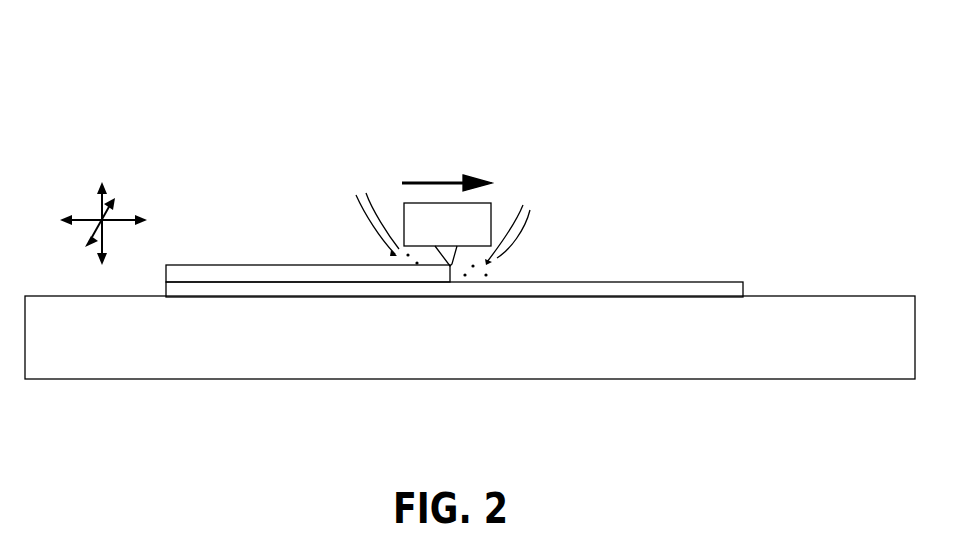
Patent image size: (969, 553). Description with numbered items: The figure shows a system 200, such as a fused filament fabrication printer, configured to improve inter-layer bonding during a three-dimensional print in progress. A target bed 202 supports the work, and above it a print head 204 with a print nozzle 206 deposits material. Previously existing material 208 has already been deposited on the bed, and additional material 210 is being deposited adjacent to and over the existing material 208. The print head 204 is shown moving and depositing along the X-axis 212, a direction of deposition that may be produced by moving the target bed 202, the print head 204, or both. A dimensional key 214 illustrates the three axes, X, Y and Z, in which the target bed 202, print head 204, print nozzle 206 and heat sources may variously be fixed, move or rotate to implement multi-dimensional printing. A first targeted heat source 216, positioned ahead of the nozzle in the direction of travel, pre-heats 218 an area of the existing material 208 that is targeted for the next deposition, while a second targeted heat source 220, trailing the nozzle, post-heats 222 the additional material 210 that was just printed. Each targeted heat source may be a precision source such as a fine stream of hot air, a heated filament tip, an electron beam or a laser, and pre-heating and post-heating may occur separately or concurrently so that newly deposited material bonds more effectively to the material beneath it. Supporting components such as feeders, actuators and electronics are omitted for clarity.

The system 200 is at (472, 78).
The target bed 202 is at (863, 368).
The print head 204 is at (491, 203).
The print nozzle 206 is at (440, 253).
The existing material 208 is at (685, 281).
The additional material 210 is at (250, 265).
The X-axis 212 is at (423, 183).
The dimensional key 214 is at (123, 170).
The first targeted heat source 216 is at (520, 238).
The heat 218 is at (486, 275).
The second targeted heat source 220 is at (363, 227).
The heat 222 is at (392, 258).